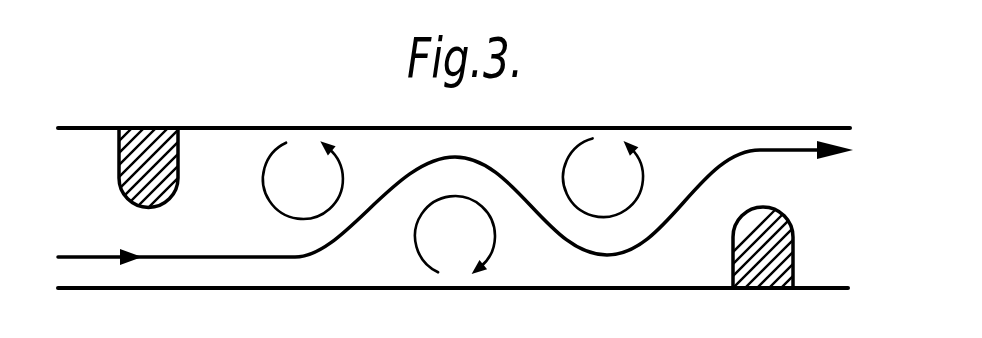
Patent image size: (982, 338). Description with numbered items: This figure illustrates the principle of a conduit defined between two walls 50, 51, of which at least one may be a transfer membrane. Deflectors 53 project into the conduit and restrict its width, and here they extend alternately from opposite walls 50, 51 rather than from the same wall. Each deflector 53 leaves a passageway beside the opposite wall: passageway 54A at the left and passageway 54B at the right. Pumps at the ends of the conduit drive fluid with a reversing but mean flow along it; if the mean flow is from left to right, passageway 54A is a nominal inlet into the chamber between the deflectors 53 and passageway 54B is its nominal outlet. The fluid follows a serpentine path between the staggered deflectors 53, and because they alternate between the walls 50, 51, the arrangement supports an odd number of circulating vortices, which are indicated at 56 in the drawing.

The wall 50 is at (513, 127).
The wall 51 is at (548, 289).
The deflectors 53 is at (172, 126).
The passageway 54A is at (140, 267).
The passageway 54B is at (780, 143).
The vortex / recirculation zones 56 is at (356, 242).